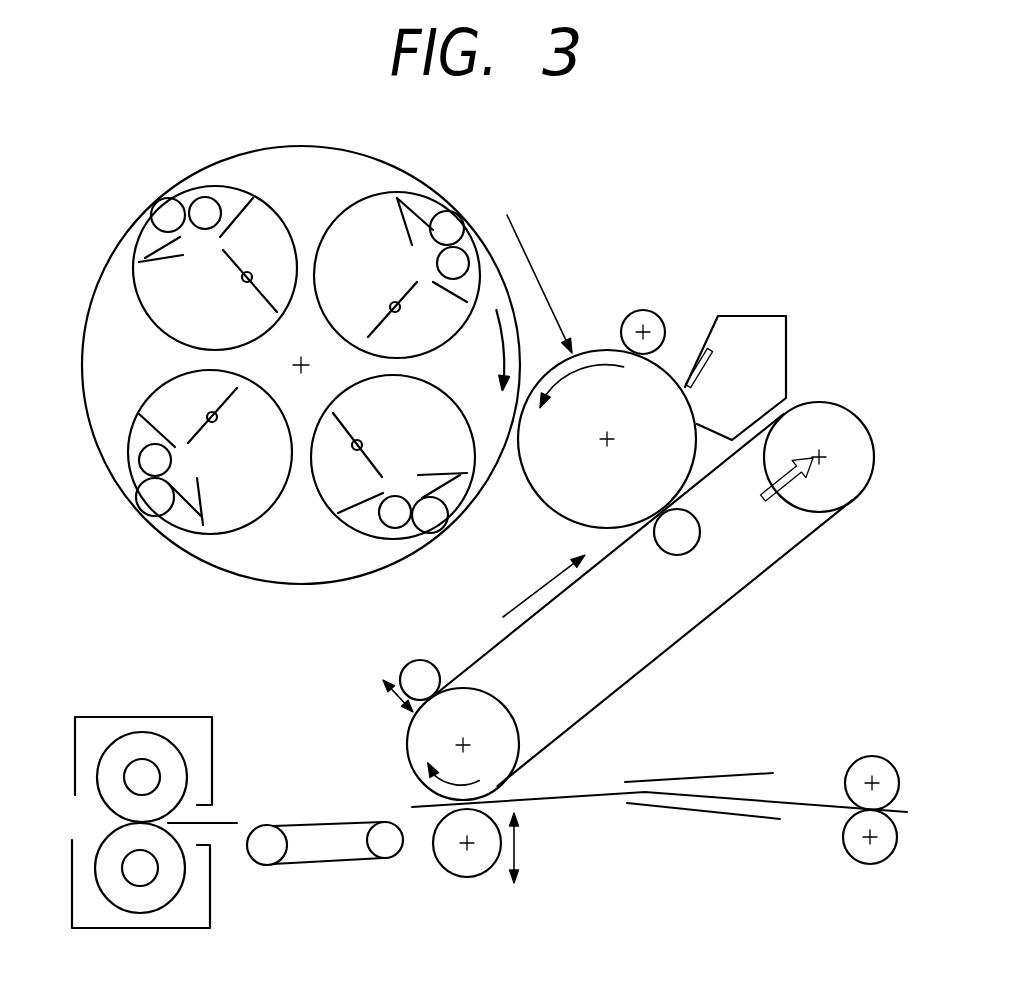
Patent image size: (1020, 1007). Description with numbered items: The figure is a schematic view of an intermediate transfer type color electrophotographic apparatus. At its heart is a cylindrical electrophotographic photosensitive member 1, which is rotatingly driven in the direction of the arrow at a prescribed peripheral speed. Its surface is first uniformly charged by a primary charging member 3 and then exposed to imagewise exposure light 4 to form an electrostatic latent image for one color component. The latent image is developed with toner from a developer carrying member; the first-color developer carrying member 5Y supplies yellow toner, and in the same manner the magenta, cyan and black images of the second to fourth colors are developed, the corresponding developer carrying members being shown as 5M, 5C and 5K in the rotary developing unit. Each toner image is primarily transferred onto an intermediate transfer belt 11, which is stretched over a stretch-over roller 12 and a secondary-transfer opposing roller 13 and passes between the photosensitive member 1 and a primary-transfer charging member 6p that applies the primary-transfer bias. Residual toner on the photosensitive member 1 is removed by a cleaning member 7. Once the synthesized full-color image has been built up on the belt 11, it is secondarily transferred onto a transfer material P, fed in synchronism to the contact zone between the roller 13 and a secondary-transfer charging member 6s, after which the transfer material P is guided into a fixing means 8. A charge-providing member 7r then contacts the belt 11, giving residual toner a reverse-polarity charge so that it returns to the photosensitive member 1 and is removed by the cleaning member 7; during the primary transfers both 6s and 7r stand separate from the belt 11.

The electrophotographic photosensitive member 1 is at (600, 355).
The primary charging member 3 is at (663, 322).
The exposure light 4 is at (533, 267).
The cyan developing unit 5C is at (147, 295).
The magenta developing unit 5M is at (362, 208).
The black developing unit 5K is at (157, 395).
The first-color developer carrying member 5Y is at (340, 512).
The primary-transfer charging member 6p is at (672, 542).
The secondary-transfer charging member 6s is at (442, 857).
The cleaning member 7 is at (778, 362).
The charge-providing member 7r is at (427, 668).
The fixing means 8 is at (80, 750).
The intermediate transfer belt 11 is at (803, 542).
The stretch-over roller 12 is at (862, 462).
The secondary-transfer opposing roller 13 is at (498, 717).
The transfer material P is at (588, 797).